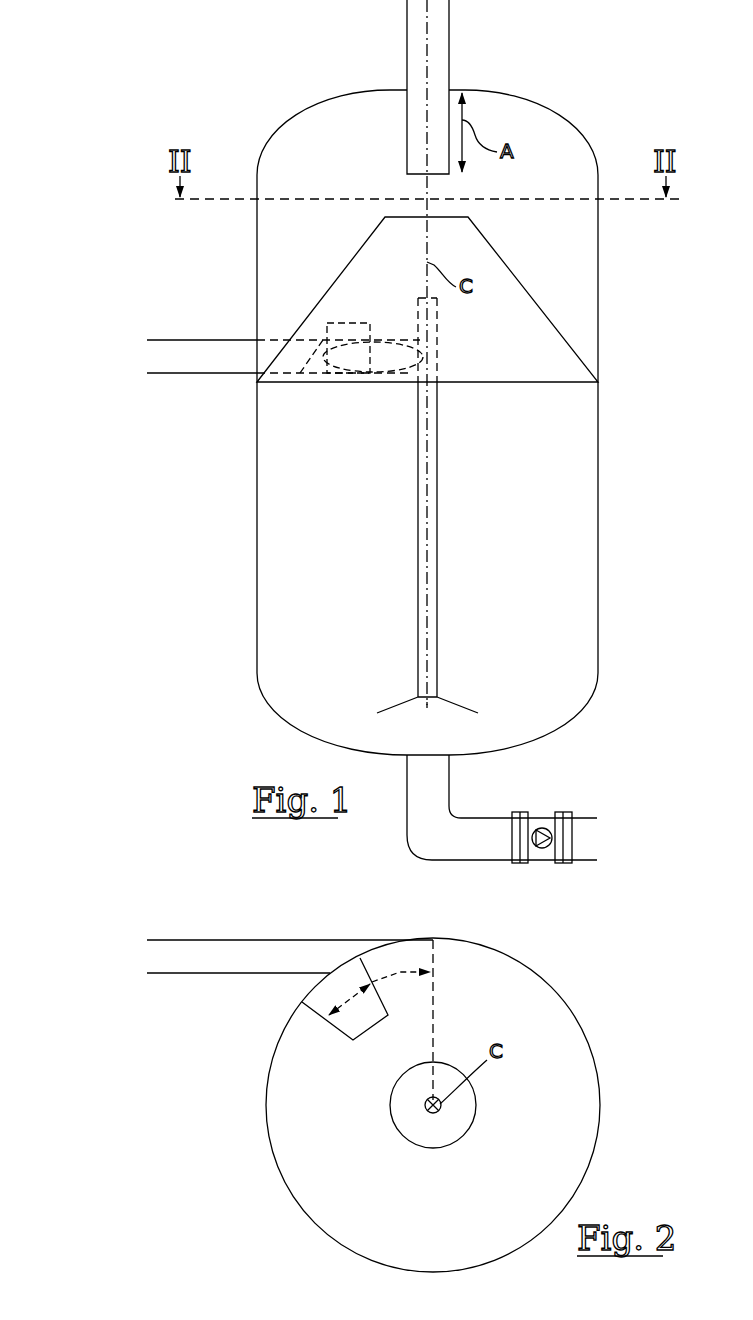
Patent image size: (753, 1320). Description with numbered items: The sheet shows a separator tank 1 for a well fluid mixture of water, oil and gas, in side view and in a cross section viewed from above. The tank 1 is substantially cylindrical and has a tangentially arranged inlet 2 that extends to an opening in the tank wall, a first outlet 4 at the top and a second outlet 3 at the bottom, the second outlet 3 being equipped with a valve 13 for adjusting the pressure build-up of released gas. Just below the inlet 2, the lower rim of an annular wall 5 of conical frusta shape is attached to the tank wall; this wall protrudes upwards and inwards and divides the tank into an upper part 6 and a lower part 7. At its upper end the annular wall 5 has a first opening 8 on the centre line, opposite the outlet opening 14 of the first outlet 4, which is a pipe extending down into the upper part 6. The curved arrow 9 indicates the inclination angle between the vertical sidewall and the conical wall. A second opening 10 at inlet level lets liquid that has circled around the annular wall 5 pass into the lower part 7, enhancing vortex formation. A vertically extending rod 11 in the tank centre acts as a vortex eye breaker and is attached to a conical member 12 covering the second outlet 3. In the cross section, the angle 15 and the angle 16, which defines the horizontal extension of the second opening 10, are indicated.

In FIG. 1, the separator tank 1 is at (424, 377).
In FIG. 2, the separator tank 1 is at (428, 1111).
In FIG. 1, the inlet 2 is at (165, 325).
In FIG. 2, the inlet 2 is at (190, 928).
In FIG. 1, the second outlet 3 is at (519, 846).
In FIG. 1, the first outlet 4 is at (463, 38).
In FIG. 1, the annular wall 5 is at (466, 331).
In FIG. 2, the annular wall 5 is at (550, 1022).
In FIG. 1, the upper part 6 is at (385, 404).
In FIG. 1, the lower part 7 is at (209, 560).
In FIG. 1, the first opening 8 is at (455, 213).
In FIG. 2, the first opening 8 is at (455, 1122).
In FIG. 1, the curved arrow 9 is at (616, 306).
In FIG. 1, the second opening 10 is at (333, 330).
In FIG. 2, the second opening 10 is at (322, 992).
In FIG. 1, the rod 11 is at (436, 505).
In FIG. 1, the conical member 12 is at (458, 705).
In FIG. 1, the valve 13 is at (538, 822).
In FIG. 1, the outlet opening 14 is at (346, 120).
In FIG. 2, the angle 15 is at (400, 970).
In FIG. 2, the angle 16 is at (343, 1000).